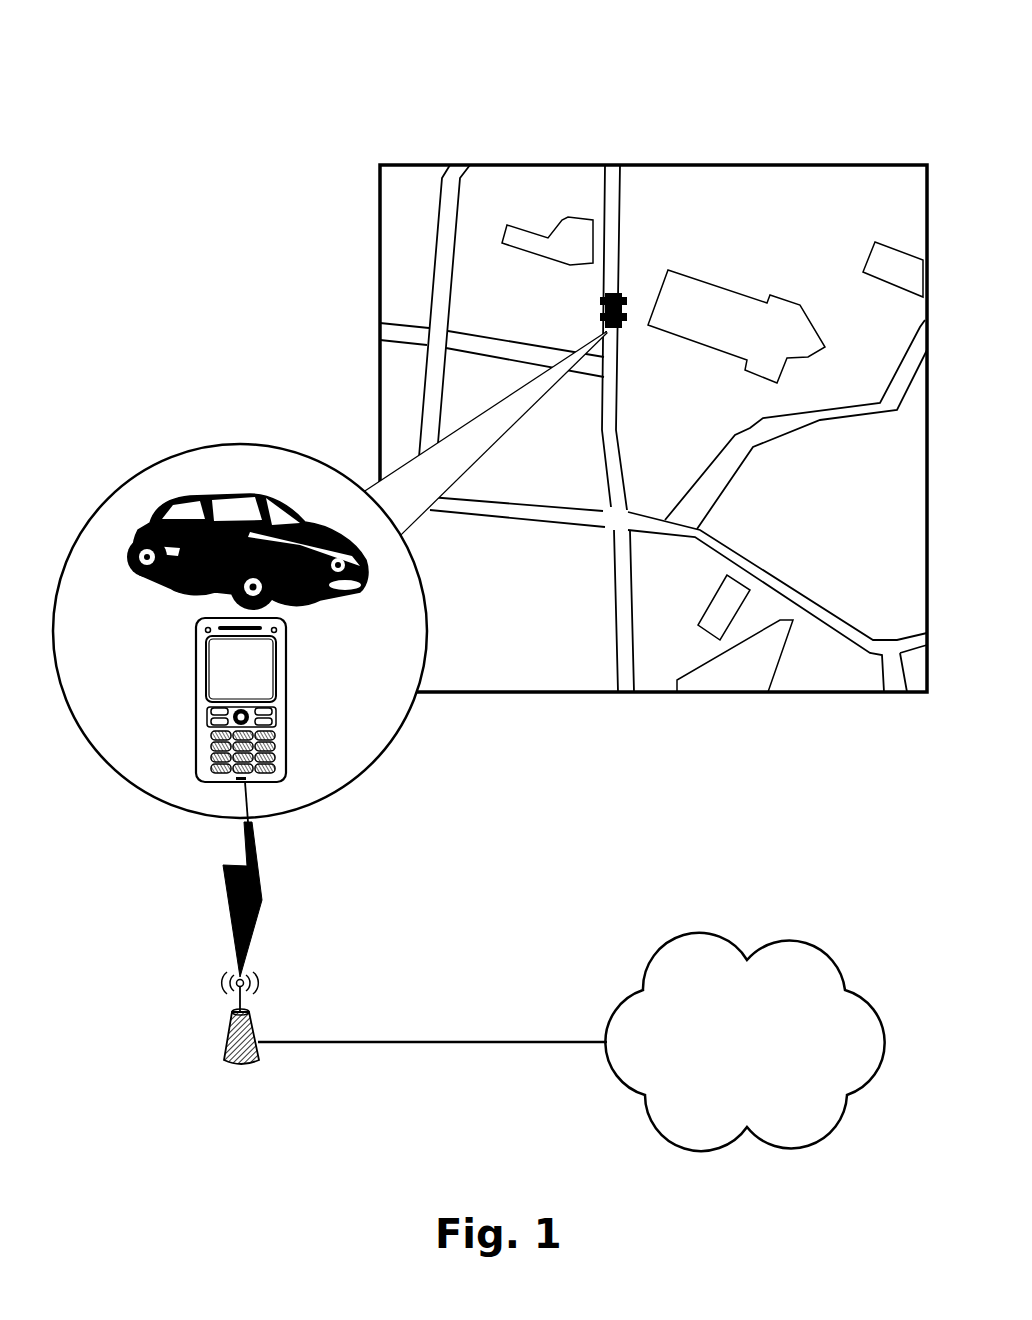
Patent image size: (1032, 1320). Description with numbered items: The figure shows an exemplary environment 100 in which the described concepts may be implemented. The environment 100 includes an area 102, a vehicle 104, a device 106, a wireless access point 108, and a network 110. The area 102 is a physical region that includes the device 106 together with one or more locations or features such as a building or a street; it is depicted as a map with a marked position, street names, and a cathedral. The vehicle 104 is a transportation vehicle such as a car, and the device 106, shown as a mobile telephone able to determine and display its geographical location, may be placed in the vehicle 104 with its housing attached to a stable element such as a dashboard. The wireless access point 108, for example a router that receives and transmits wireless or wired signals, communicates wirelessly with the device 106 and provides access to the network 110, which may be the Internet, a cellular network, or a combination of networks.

The environment 100 is at (366, 68).
The area 102 is at (828, 164).
The vehicle 104 is at (607, 293).
The device 106 is at (288, 682).
The wireless access point 108 is at (230, 1018).
The network 110 is at (786, 937).